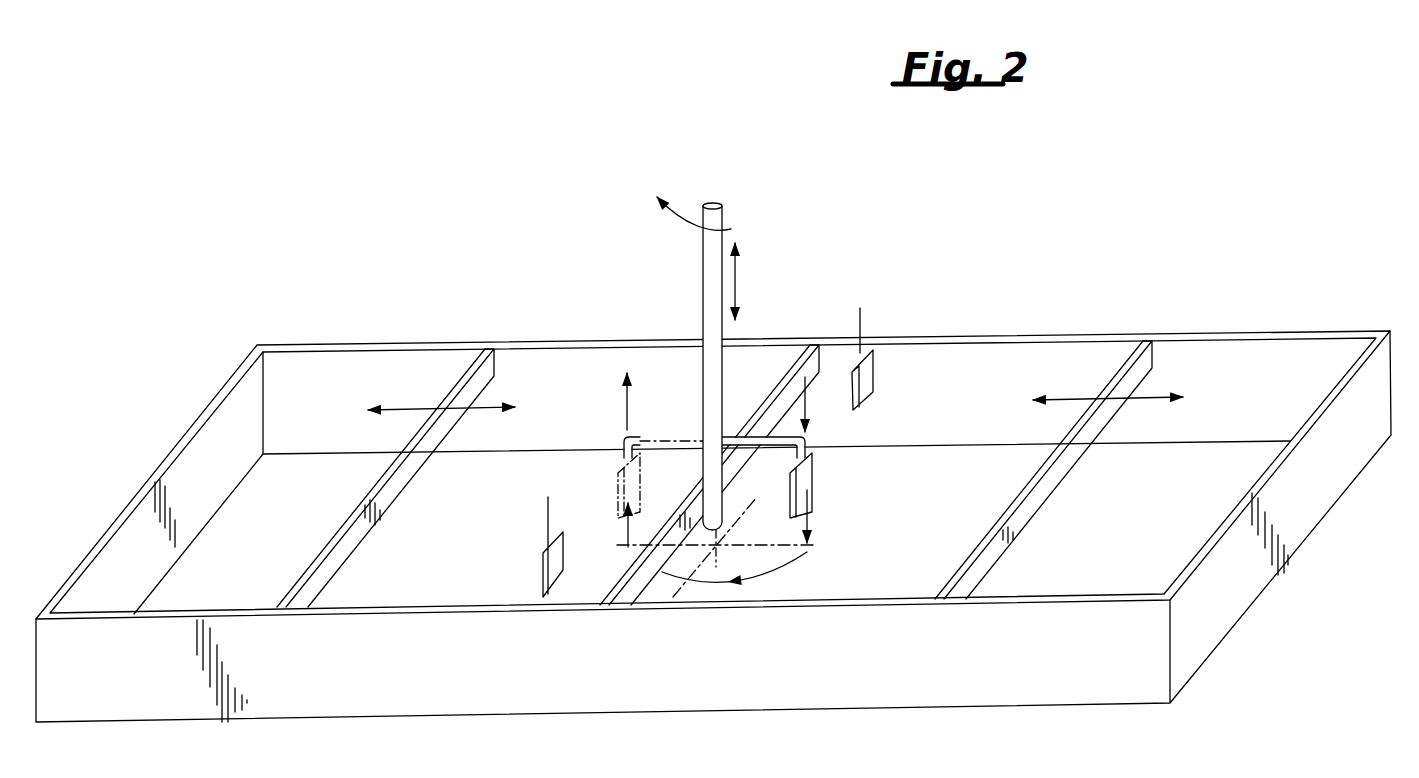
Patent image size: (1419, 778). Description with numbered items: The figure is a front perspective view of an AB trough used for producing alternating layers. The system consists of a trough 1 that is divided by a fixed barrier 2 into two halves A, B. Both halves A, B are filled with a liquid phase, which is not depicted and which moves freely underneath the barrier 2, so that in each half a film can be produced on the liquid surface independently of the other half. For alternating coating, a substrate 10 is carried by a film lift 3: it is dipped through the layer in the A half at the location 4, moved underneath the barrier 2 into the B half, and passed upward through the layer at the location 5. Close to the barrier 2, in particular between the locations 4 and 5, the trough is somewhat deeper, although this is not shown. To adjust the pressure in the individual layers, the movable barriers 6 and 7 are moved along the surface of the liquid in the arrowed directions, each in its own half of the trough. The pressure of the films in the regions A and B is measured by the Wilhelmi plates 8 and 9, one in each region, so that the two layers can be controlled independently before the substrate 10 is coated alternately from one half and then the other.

The trough 1 is at (528, 698).
The fixed barrier 2 is at (778, 387).
The film lift 3 is at (712, 258).
The location 4 is at (818, 478).
The location 5 is at (610, 487).
The movable barrier 6 is at (1122, 377).
The movable barrier 7 is at (458, 383).
The Wilhelmi plate 8 is at (880, 365).
The Wilhelmi plate 9 is at (550, 580).
The substrate 10 is at (812, 505).
The A half of the trough A is at (983, 385).
The B half of the trough B is at (558, 390).